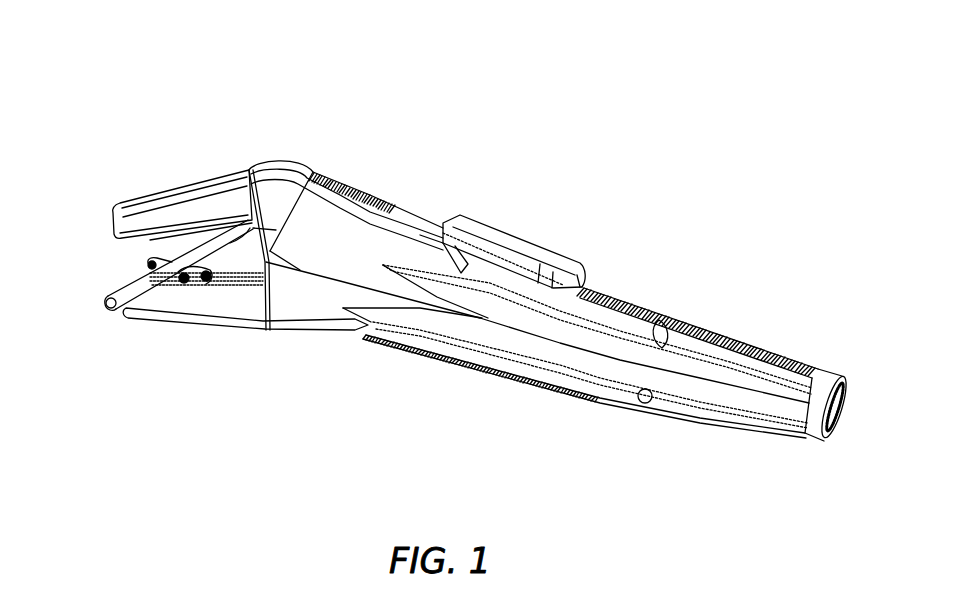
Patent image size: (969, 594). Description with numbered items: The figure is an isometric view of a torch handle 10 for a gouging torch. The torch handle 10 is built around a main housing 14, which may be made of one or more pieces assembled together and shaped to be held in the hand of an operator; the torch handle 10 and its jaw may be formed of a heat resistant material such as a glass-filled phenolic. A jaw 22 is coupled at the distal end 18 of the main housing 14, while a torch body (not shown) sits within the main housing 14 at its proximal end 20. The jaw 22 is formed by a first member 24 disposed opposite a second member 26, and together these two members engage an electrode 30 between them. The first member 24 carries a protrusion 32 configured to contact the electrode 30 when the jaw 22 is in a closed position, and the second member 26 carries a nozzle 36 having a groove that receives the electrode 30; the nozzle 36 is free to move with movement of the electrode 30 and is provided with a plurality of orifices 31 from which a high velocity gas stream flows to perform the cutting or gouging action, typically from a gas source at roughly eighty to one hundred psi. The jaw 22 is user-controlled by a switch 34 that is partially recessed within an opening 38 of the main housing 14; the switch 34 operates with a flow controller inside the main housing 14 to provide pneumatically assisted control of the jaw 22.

The torch handle 10 is at (580, 134).
The main housing 14 is at (757, 357).
The distal end 18 is at (288, 153).
The proximal end 20 is at (857, 356).
The jaw 22 is at (85, 263).
The first member 24 is at (186, 185).
The second member 26 is at (212, 328).
The electrode 30 is at (102, 311).
The orifices 31 is at (177, 289).
The protrusion 32 is at (149, 241).
The switch 34 is at (485, 224).
The nozzle 36 is at (204, 271).
The opening 38 is at (541, 243).